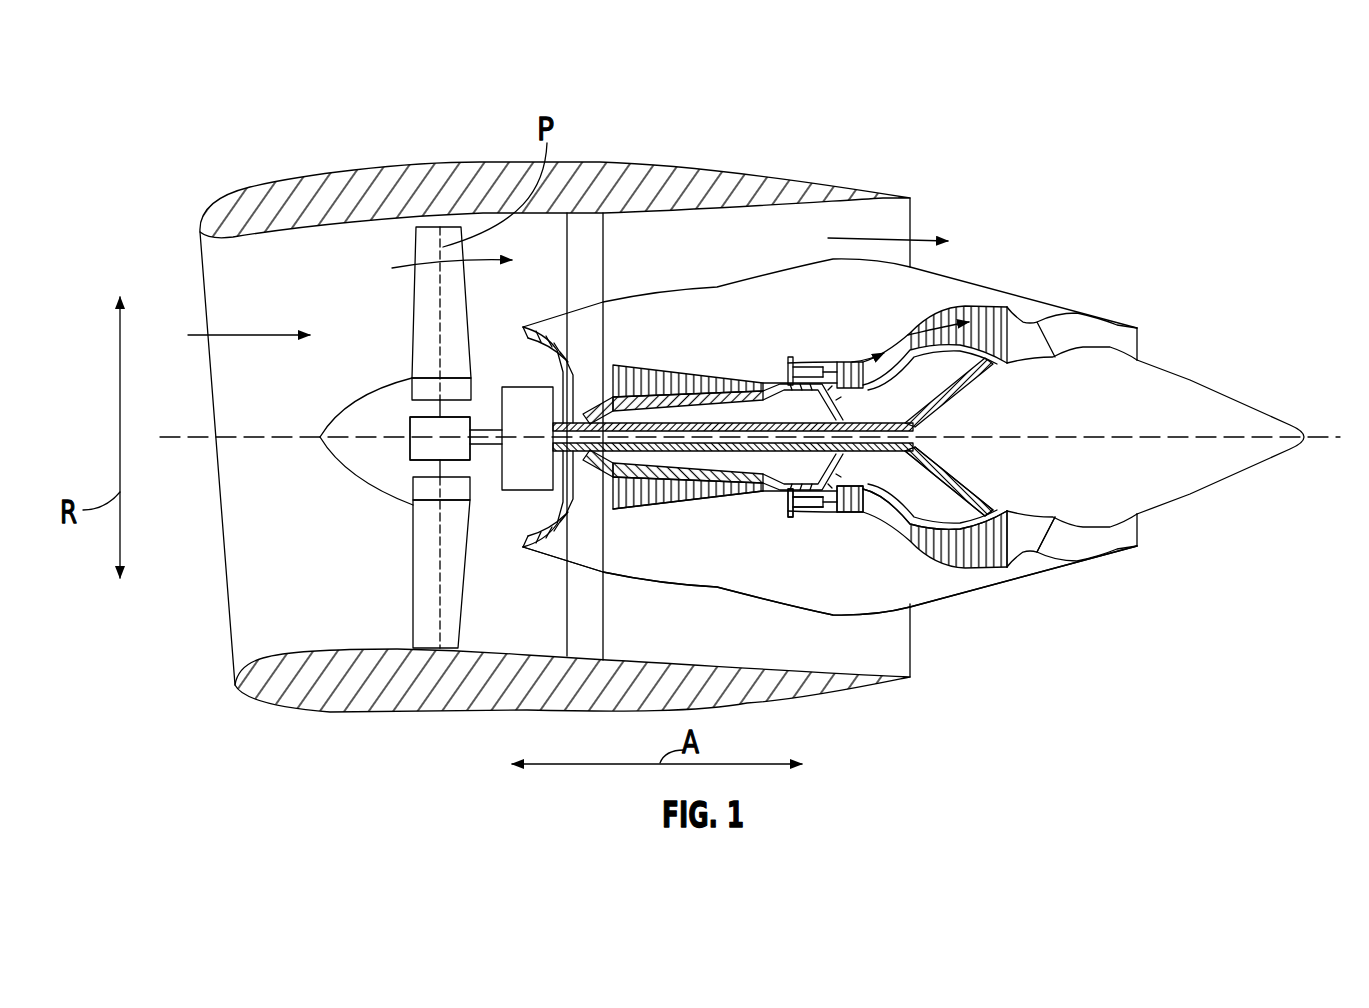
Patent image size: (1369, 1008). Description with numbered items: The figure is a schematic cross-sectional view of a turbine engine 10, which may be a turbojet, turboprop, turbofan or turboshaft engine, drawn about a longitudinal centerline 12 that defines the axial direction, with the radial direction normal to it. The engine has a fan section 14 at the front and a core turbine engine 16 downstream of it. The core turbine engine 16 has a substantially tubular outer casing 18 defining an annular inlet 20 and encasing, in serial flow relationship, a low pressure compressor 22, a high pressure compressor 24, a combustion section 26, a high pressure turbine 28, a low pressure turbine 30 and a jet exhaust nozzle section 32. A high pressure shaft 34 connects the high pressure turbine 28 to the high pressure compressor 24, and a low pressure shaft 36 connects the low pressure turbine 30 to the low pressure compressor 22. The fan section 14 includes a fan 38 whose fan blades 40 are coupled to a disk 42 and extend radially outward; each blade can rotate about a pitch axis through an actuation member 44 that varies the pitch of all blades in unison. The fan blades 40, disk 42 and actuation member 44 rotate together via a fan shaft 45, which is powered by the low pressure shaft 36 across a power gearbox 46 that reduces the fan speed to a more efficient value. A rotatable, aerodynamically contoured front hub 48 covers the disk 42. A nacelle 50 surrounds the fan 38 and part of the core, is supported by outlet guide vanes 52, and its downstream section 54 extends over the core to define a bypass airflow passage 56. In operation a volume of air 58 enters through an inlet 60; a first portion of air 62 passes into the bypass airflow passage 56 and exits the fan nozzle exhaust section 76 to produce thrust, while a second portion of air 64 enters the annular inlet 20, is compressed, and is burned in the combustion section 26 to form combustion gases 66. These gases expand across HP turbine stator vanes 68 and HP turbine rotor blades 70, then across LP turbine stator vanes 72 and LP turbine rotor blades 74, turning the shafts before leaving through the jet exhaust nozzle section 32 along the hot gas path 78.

The turbine engine 10 is at (1082, 122).
The longitudinal centerline 12 is at (1053, 433).
The fan section 14 is at (322, 252).
The core turbine engine 16 is at (690, 311).
The outer casing 18 is at (735, 598).
The annular inlet 20 is at (517, 544).
The low pressure compressor 22 is at (563, 518).
The high pressure compressor 24 is at (647, 484).
The combustion section 26 is at (807, 500).
The high pressure turbine 28 is at (870, 513).
The low pressure turbine 30 is at (994, 572).
The jet exhaust nozzle section 32 is at (1050, 553).
The high pressure shaft 34 is at (820, 367).
The low pressure shaft 36 is at (904, 422).
The fan 38 is at (380, 497).
The fan blades 40 is at (408, 557).
The disk 42 is at (423, 388).
The actuation member 44 is at (408, 430).
The fan shaft 45 is at (477, 427).
The power gearbox 46 is at (541, 400).
The front hub 48 is at (337, 457).
The nacelle 50 is at (420, 713).
The outlet guide vanes 52 is at (605, 262).
The downstream section 54 is at (857, 192).
The bypass airflow passage 56 is at (776, 254).
The volume of air 58 is at (242, 333).
The inlet 60 is at (227, 610).
The first portion of air 62 is at (408, 270).
The second portion of air 64 is at (565, 356).
The combustion gases 66 is at (950, 310).
The HP turbine stator vanes 68 is at (823, 511).
The HP turbine rotor blades 70 is at (846, 496).
The LP turbine stator vanes 72 is at (868, 614).
The LP turbine rotor blades 74 is at (927, 560).
The fan nozzle exhaust section 76 is at (893, 223).
The hot gas path 78 is at (896, 342).